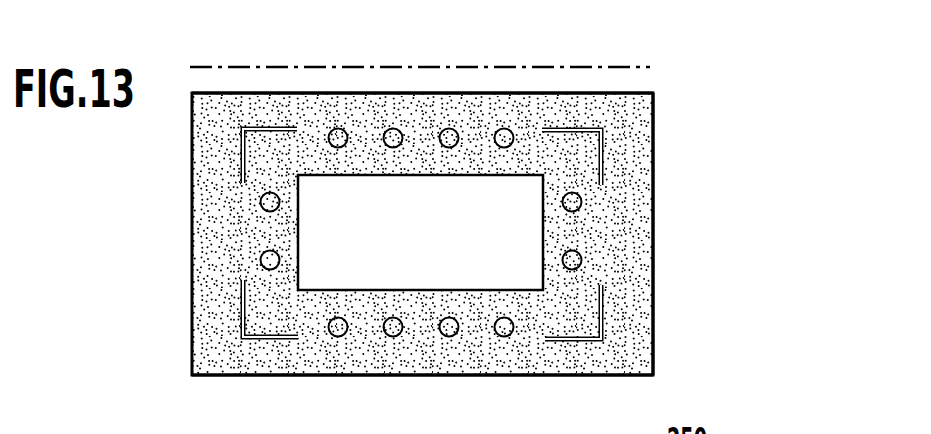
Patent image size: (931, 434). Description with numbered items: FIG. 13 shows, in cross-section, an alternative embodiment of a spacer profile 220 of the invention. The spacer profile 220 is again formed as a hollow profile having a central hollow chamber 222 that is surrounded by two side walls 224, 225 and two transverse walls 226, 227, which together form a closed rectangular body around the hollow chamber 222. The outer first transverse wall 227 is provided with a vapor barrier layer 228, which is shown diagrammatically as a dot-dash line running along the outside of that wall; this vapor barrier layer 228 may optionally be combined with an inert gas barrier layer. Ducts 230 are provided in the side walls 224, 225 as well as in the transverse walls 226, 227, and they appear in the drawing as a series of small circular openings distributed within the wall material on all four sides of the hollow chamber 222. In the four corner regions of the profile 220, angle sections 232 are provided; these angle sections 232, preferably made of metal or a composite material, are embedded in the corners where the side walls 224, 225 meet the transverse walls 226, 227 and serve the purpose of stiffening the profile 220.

The spacer profile 220 is at (705, 222).
The hollow chamber 222 is at (438, 253).
The side wall 224 is at (191, 203).
The side wall 225 is at (675, 147).
The transverse wall 226 is at (480, 377).
The outer first transverse wall 227 is at (520, 93).
The vapor barrier layer 228 is at (447, 67).
The ducts 230 is at (453, 321).
The angle sections 232 is at (272, 127).